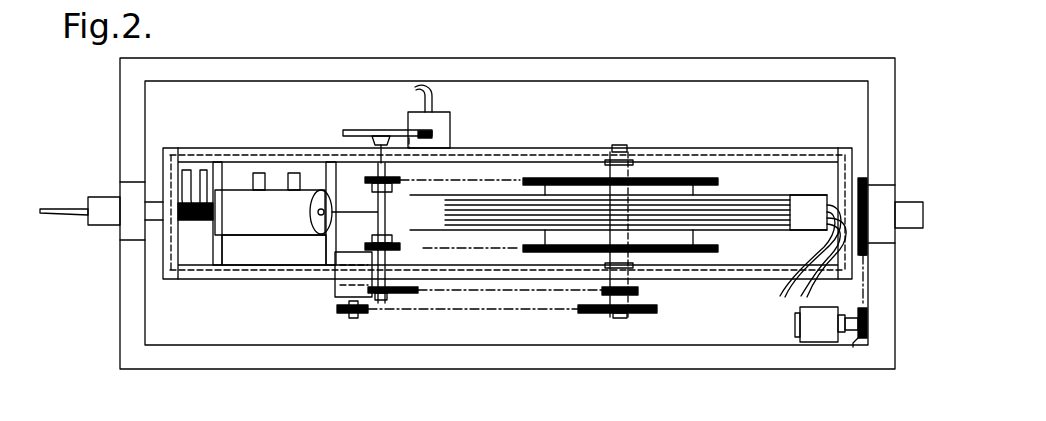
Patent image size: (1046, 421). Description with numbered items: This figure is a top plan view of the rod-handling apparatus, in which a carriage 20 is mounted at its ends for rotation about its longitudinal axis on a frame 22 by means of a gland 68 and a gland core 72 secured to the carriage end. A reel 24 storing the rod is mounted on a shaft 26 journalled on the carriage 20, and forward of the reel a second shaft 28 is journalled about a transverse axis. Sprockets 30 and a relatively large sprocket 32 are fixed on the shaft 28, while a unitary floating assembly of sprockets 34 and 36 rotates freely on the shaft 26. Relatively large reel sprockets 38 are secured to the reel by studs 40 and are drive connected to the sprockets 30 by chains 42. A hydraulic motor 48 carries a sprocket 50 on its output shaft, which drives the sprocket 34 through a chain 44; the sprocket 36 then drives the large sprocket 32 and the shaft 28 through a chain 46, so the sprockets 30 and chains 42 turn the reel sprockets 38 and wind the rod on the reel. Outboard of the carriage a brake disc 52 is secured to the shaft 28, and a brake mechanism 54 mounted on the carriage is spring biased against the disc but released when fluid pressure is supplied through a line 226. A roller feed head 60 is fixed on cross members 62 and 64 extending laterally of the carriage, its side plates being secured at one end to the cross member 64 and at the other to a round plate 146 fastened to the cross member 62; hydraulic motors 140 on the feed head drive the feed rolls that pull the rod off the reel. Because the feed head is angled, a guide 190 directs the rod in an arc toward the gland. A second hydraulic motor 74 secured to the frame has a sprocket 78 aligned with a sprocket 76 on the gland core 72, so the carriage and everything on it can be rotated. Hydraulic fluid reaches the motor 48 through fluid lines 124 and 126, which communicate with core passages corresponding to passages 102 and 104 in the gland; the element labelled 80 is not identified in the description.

The carriage 20 is at (762, 152).
The frame 22 is at (680, 358).
The reel 24 is at (797, 195).
The shaft 26 is at (630, 170).
The shaft 28 is at (375, 226).
The sprockets 30 is at (370, 189).
The relatively large sprocket 32 is at (403, 295).
The sprocket 34 is at (600, 311).
The sprocket 36 is at (638, 291).
The reel sprockets 38 is at (710, 178).
The studs 40 is at (718, 183).
The chains 42 is at (492, 180).
The chain 44 is at (508, 309).
The chain 46 is at (465, 290).
The hydraulic motor 48 is at (345, 272).
The sprocket 50 is at (342, 315).
The brake disc 52 is at (352, 130).
The brake mechanism 54 is at (450, 122).
The roller feed head 60 is at (278, 218).
The cross member 62 is at (329, 172).
The cross member 64 is at (217, 163).
The gland 68 is at (908, 208).
The gland core 72 is at (867, 203).
The second hydraulic motor 74 is at (818, 330).
The sprocket 76 is at (868, 252).
The sprocket 78 is at (853, 343).
The coupling axis 80 is at (865, 298).
The passage 102 is at (187, 170).
The passage 104 is at (203, 170).
The fluid line 124 is at (782, 290).
The fluid line 126 is at (800, 297).
The hydraulic motors 140 is at (293, 173).
The round plate 146 is at (311, 224).
The guide 190 is at (212, 213).
The line 226 is at (433, 96).